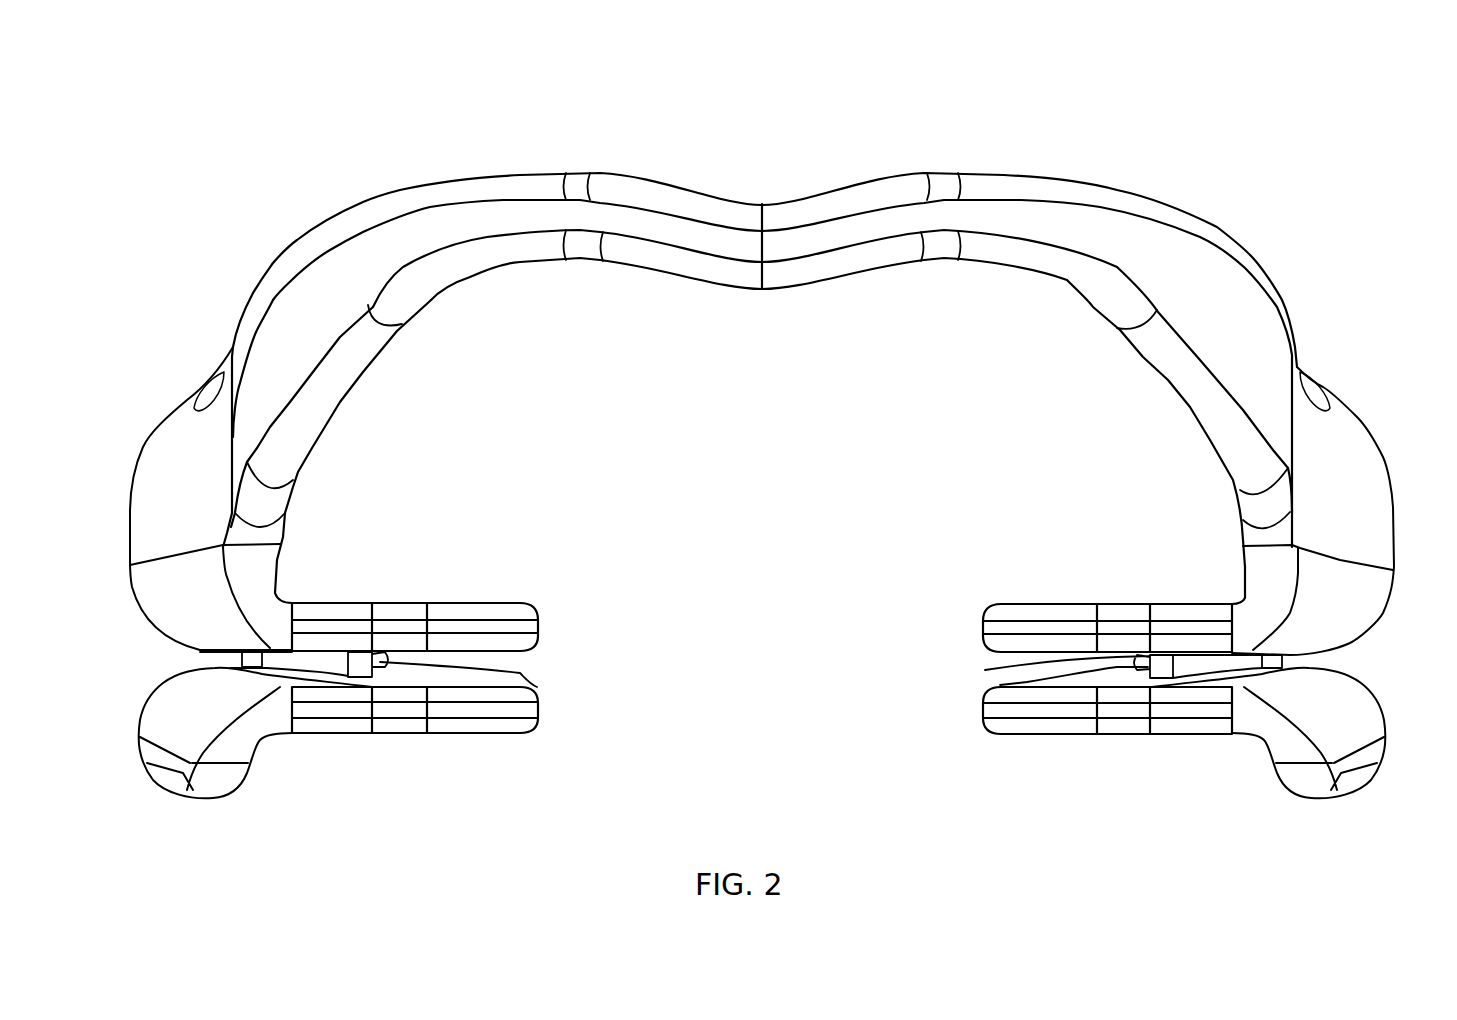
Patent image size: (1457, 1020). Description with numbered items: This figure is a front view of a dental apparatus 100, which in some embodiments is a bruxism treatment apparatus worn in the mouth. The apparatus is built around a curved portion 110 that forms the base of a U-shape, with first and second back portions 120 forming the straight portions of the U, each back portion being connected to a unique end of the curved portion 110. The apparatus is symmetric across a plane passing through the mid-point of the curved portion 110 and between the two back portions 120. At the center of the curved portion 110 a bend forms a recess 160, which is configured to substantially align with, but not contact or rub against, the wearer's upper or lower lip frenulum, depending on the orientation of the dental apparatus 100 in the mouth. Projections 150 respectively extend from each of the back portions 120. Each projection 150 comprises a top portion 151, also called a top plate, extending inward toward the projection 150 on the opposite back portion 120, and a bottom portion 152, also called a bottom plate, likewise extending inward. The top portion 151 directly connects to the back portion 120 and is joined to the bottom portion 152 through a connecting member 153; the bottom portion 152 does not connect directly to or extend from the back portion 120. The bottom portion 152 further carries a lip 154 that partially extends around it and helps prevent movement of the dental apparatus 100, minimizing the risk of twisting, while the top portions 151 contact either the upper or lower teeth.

The dental apparatus 100 is at (1249, 104).
The curved portion 110 is at (947, 167).
The first and second back portions 120 is at (155, 425).
The projections 150 is at (511, 529).
The top portion 151 is at (518, 600).
The bottom portion 152 is at (542, 724).
The connecting member 153 is at (387, 657).
The lip 154 is at (135, 722).
The recess 160 is at (778, 154).